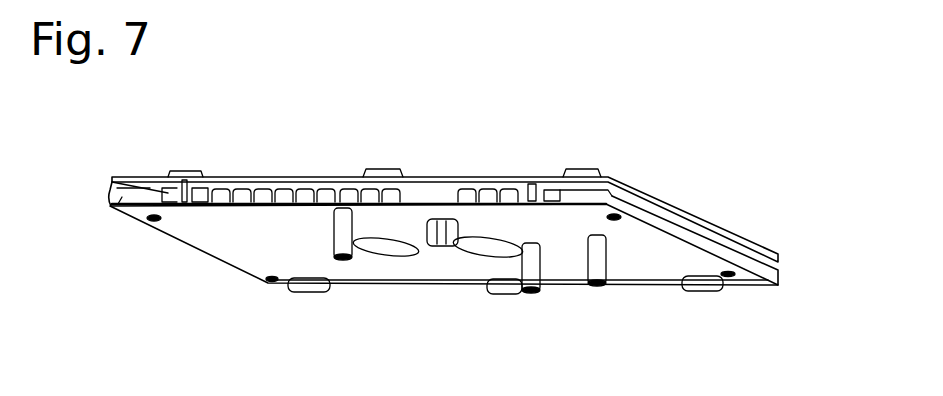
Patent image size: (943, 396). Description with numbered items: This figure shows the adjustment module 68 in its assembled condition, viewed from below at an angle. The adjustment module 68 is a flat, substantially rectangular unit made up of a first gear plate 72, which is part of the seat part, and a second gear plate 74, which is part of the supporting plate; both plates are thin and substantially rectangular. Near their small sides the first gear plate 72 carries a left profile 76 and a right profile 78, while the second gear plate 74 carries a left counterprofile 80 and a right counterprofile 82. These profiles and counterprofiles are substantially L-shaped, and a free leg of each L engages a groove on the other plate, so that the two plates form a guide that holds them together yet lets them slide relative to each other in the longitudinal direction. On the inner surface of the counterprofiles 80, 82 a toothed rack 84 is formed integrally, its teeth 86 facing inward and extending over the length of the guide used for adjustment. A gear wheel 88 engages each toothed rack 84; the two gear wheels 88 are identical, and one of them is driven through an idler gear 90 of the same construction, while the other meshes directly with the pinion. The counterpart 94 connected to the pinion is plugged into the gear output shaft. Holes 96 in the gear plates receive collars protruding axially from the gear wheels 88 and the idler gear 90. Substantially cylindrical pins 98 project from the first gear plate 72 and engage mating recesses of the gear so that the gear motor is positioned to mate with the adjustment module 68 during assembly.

The adjustment module 68 is at (748, 185).
The first gear plate 72 is at (233, 243).
The second gear plate 74 is at (437, 177).
The left profile 76 is at (608, 182).
The right profile 78 is at (148, 188).
The left counterprofile 80 is at (545, 178).
The right counterprofile 82 is at (185, 178).
The toothed rack 84 is at (210, 179).
The teeth 86 is at (530, 178).
The gear wheel 88 is at (282, 178).
The idler gear 90 is at (372, 177).
The counterpart 94 is at (443, 250).
The holes 96 is at (370, 258).
The cylindrical pins 98 is at (593, 284).